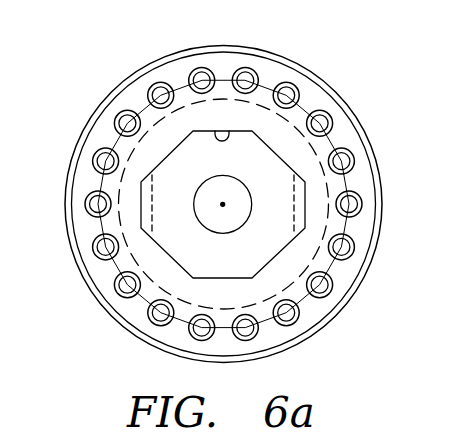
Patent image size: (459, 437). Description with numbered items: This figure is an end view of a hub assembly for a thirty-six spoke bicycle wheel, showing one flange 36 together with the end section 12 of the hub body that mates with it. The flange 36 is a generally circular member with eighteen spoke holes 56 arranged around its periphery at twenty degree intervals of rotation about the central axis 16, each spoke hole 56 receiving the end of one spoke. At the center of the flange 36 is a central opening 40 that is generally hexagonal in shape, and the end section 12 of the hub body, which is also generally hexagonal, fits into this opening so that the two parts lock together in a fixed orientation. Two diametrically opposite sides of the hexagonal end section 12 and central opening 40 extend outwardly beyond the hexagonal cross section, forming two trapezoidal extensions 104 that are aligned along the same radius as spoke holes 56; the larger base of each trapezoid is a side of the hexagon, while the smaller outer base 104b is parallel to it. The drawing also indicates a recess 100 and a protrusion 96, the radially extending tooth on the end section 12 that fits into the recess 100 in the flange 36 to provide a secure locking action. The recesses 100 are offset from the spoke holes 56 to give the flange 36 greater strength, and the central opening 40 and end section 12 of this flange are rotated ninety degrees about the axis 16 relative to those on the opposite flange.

The flange 36 is at (117, 82).
The recess 100 is at (230, 130).
The protrusion 96 is at (257, 157).
The trapezoidal extension 104 is at (300, 192).
The smaller outer base 104b is at (106, 161).
The axis 16 is at (222, 204).
The end section 12 is at (237, 265).
The central opening 40 is at (267, 248).
The spoke hole 56 is at (127, 285).